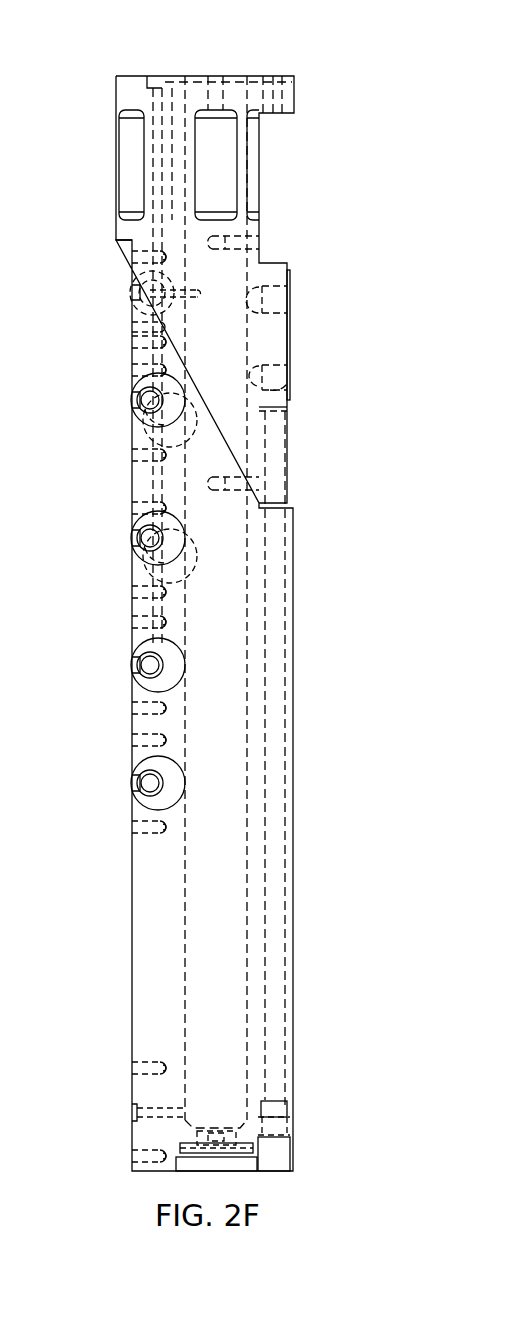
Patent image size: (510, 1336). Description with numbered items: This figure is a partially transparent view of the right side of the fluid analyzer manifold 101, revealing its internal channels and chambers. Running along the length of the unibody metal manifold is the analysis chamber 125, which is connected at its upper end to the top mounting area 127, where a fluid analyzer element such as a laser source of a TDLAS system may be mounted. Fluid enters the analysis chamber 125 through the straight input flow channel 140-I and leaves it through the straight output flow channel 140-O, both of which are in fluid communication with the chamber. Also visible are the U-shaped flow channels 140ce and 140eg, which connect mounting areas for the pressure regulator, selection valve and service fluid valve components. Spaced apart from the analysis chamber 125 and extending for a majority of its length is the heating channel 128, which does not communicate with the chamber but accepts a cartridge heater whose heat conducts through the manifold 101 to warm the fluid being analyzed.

The fluid analyzer manifold 101 is at (312, 36).
The top mounting area 127 is at (123, 86).
The analysis chamber 125 is at (217, 1043).
The heating channel 128 is at (272, 1085).
The input flow channel 140-I is at (135, 292).
The flow channel 140eg is at (135, 327).
The flow channel 140ce is at (150, 478).
The output flow channel 140-O is at (143, 1108).